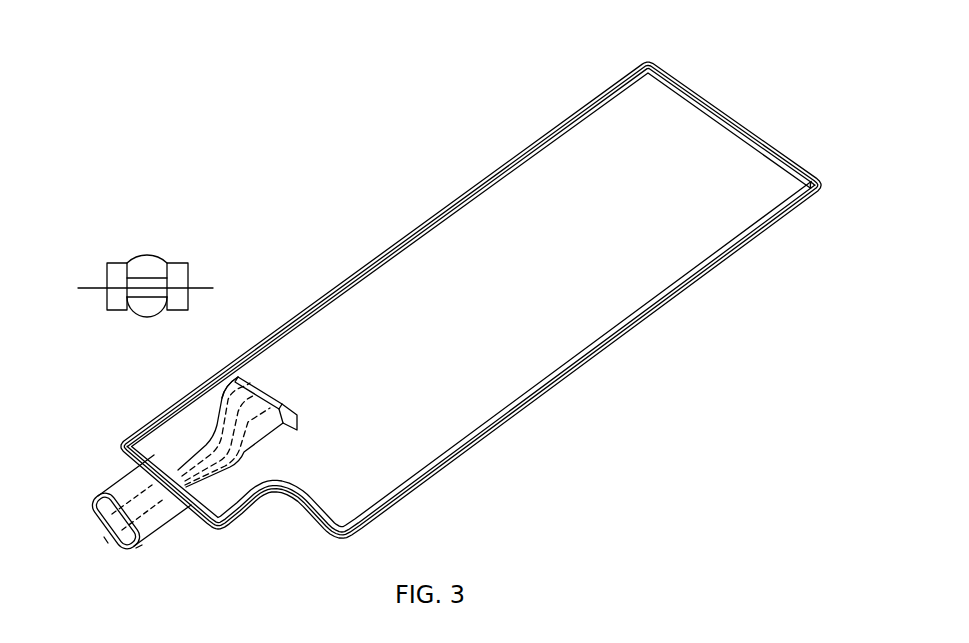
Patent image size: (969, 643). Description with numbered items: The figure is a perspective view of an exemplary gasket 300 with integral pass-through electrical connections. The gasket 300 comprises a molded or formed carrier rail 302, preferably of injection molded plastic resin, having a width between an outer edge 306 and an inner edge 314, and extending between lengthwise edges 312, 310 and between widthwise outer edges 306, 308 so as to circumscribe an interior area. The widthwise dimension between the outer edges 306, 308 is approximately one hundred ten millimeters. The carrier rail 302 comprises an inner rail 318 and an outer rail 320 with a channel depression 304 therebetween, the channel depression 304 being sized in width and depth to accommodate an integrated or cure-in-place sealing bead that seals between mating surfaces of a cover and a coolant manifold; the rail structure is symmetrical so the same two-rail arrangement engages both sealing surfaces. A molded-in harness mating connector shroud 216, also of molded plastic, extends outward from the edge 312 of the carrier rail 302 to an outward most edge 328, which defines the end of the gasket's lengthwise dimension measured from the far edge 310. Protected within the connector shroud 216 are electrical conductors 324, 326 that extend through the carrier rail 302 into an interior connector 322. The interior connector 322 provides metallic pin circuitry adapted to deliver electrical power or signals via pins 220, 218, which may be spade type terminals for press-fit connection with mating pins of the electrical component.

The gasket 300 is at (352, 128).
The carrier rail 302 is at (421, 222).
The outer edge 306 is at (458, 192).
The lengthwise edge 310 is at (756, 130).
The inner edge 314 is at (478, 200).
The outer edge 308 is at (712, 281).
The lengthwise edge 312 is at (187, 522).
The channel depression 304 is at (147, 255).
The inner rail 318 is at (117, 263).
The outer rail 320 is at (180, 263).
The harness mating connector shroud 216 is at (122, 496).
The electrical conductor 324 is at (94, 506).
The electrical conductor 326 is at (142, 547).
The outward most edge 328 is at (102, 540).
The interior connector 322 is at (250, 450).
The pin 218 is at (300, 413).
The pin 220 is at (255, 380).